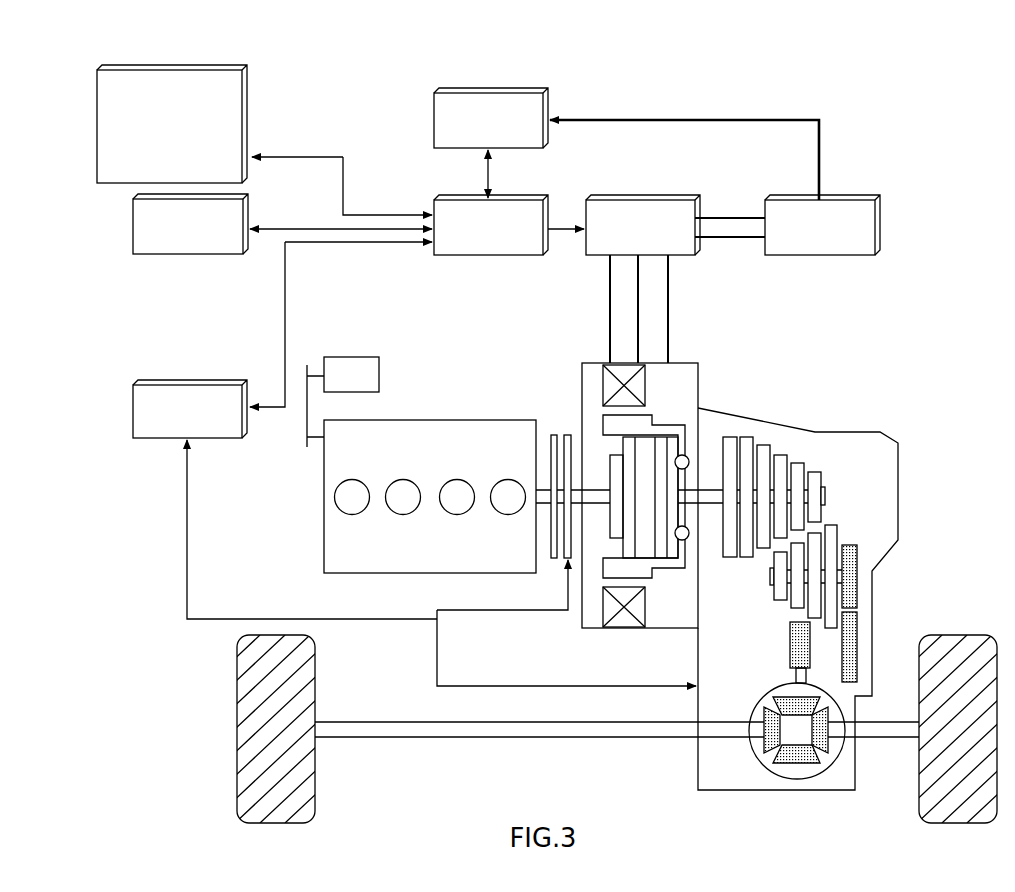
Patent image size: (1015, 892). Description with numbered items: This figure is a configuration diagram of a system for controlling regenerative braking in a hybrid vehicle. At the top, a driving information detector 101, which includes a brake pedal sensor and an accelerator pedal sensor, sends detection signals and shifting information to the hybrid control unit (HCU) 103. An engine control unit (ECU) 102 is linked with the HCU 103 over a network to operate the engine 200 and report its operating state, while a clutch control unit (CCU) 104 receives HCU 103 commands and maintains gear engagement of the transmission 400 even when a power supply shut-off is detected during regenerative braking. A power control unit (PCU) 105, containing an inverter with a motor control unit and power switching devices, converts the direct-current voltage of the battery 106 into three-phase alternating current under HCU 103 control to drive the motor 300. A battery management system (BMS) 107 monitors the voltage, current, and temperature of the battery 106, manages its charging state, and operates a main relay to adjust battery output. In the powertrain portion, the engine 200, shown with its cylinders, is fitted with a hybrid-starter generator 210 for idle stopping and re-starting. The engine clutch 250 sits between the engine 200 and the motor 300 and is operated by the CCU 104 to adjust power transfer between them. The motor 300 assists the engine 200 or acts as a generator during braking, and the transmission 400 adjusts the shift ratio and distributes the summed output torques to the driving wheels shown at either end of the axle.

The driving information detector 101 is at (167, 68).
The engine control unit (ECU) 102 is at (133, 228).
The hybrid control unit (HCU) 103 is at (548, 200).
The clutch control unit (CCU) 104 is at (186, 383).
The power control unit (PCU) 105 is at (639, 198).
The battery 106 is at (855, 198).
The battery management system (BMS) 107 is at (487, 92).
The engine 200 is at (326, 541).
The hybrid-starter generator (HSG) 210 is at (349, 355).
The engine clutch 250 is at (553, 434).
The motor 300 is at (687, 367).
The transmission 400 is at (853, 432).